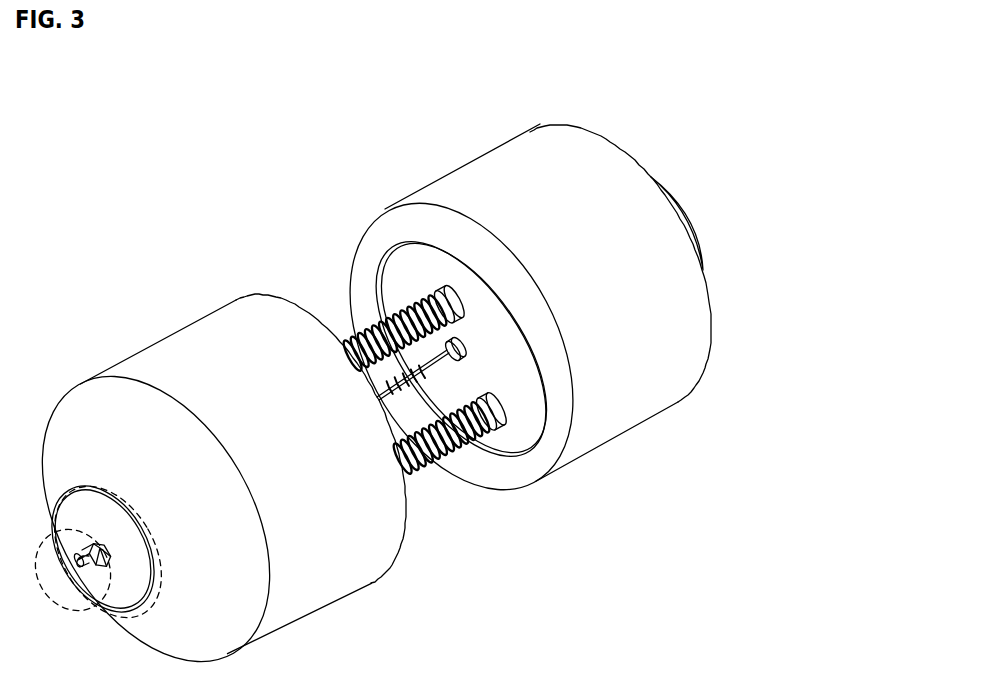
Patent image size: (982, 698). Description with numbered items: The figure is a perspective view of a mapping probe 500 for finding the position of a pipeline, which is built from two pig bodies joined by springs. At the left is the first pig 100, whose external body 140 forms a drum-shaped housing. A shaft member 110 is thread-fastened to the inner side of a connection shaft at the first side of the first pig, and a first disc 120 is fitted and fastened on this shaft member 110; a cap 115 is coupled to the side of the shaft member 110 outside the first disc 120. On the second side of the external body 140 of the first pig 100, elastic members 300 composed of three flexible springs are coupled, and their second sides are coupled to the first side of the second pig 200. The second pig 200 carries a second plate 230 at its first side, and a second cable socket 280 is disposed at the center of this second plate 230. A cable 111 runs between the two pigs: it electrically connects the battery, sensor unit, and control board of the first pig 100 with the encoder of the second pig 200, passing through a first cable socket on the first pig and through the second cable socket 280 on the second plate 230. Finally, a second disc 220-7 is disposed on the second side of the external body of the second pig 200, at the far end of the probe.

The mapping probe 500 is at (205, 228).
The first pig 100 is at (360, 604).
The external body 140 is at (210, 352).
The first disc 120 is at (117, 532).
The cap 115 is at (47, 550).
The shaft member 110 is at (87, 572).
The second pig 200 is at (598, 468).
The second plate 230 is at (410, 277).
The second disc 220-7 is at (681, 201).
The elastic members 300 is at (432, 483).
The cable 111 is at (441, 360).
The second cable socket 280 is at (475, 349).